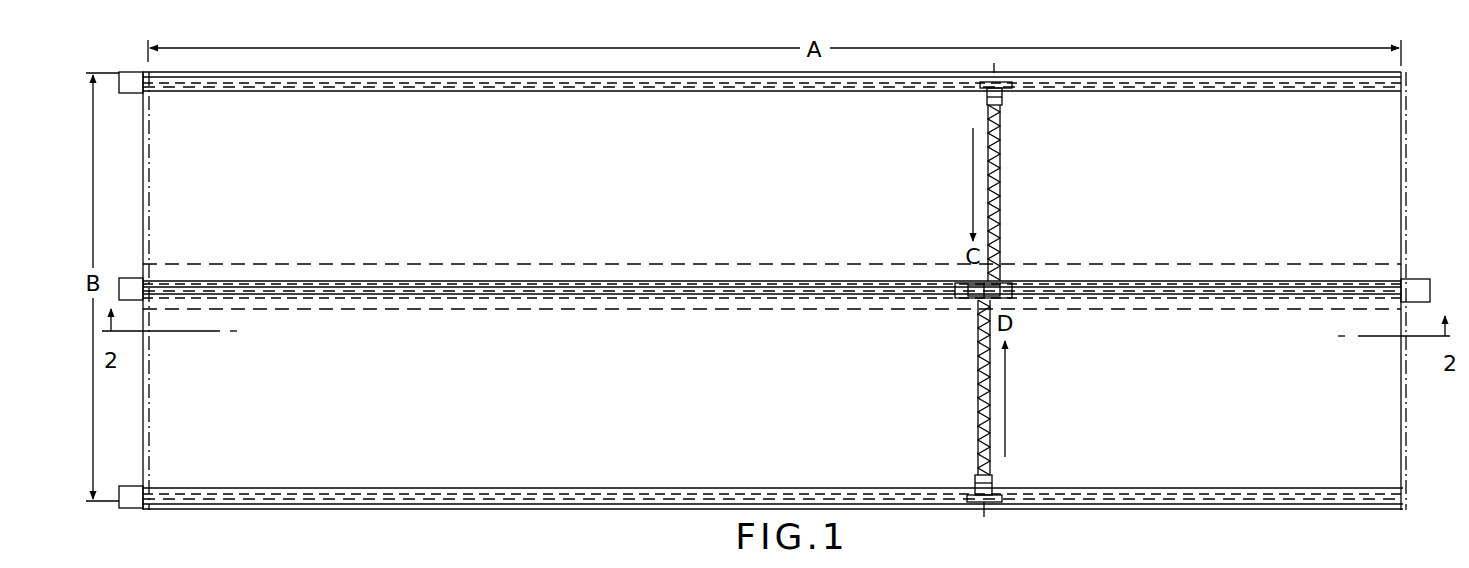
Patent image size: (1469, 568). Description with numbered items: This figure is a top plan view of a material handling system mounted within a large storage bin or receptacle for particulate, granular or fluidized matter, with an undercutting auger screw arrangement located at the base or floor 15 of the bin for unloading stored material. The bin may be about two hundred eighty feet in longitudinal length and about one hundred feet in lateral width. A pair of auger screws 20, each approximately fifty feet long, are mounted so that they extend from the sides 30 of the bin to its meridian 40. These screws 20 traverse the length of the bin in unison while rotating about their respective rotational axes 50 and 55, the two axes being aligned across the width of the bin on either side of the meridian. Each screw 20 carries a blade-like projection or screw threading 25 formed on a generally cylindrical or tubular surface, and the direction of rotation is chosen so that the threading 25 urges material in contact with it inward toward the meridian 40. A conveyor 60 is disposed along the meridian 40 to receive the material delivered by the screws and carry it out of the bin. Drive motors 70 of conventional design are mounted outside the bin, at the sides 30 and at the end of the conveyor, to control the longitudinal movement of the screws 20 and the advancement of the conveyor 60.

The floor 15 is at (630, 420).
The auger screws 20 is at (1003, 160).
The screw threading 25 is at (1001, 212).
The sides 30 is at (1205, 72).
The meridian 40 is at (1141, 283).
The rotational axis 50 is at (1001, 67).
The rotational axis 55 is at (988, 511).
The conveyor 60 is at (1430, 300).
The drive motors 70 is at (128, 93).